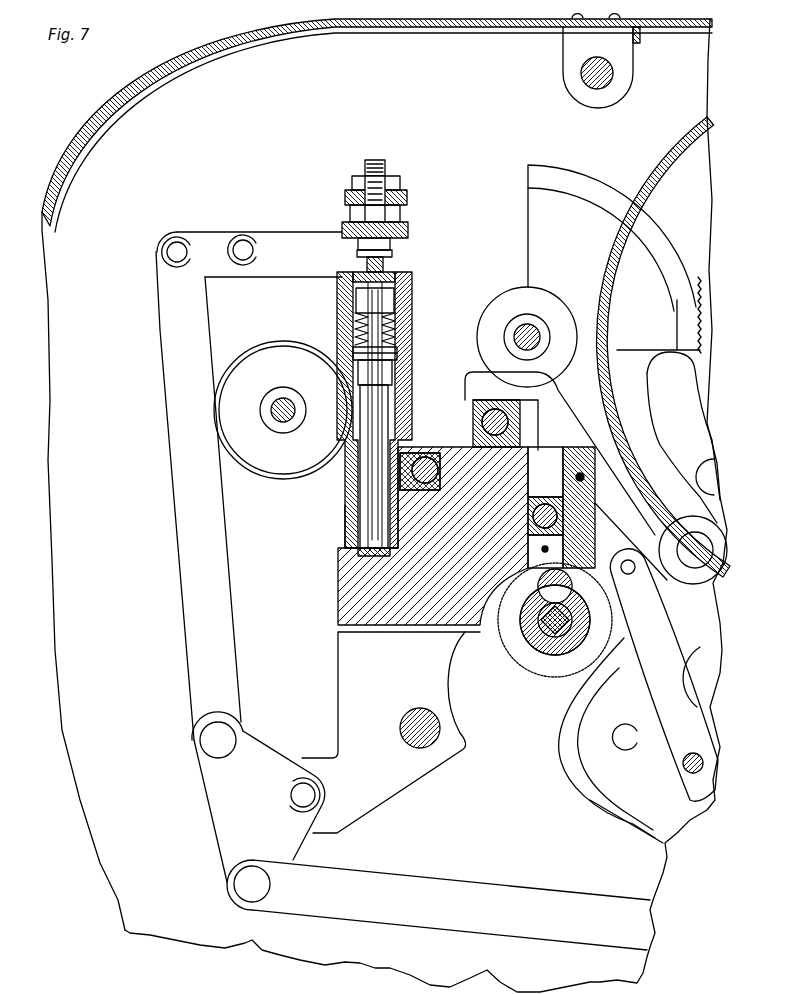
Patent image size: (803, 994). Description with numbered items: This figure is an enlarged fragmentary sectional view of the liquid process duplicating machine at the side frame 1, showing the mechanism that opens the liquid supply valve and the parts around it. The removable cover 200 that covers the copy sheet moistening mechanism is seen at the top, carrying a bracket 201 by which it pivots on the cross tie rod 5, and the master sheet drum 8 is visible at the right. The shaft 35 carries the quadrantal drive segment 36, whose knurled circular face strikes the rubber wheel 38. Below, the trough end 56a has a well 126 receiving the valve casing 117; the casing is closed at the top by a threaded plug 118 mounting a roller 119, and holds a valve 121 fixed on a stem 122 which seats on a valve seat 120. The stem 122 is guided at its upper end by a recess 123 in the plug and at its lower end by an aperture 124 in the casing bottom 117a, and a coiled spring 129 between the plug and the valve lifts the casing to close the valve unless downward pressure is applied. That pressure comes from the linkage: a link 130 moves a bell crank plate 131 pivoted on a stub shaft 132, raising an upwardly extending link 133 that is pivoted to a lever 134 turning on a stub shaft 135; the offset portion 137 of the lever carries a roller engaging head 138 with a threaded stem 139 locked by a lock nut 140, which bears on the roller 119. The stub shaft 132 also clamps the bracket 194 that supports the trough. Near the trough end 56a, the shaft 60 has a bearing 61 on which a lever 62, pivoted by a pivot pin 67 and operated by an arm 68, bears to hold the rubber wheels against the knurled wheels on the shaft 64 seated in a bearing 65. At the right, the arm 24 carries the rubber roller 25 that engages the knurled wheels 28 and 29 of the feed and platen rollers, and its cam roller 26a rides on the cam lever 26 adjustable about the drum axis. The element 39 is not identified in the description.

The side frame 1 is at (55, 238).
The cross tie rod 5 is at (613, 73).
The master sheet drum 8 is at (667, 153).
The arm 24 is at (635, 820).
The rubber roller 25 is at (560, 722).
The cam lever 26 is at (663, 428).
The cam roller 26a is at (683, 510).
The knurled wheel 28 is at (518, 652).
The knurled wheel 29 is at (712, 690).
The shaft 35 is at (522, 327).
The quadrantal drive segment 36 is at (576, 241).
The rubber wheel 38 is at (288, 371).
The roller shaft 39 is at (283, 423).
The trough end 56a is at (340, 593).
The shaft 60 is at (485, 420).
The bearing 61 is at (472, 408).
The lever 62 is at (515, 391).
The shaft 64 is at (428, 462).
The bearing 65 is at (438, 470).
The pivot pin 67 is at (580, 473).
The arm 68 is at (663, 691).
The valve casing 117 is at (412, 303).
The casing bottom 117a is at (348, 545).
The threaded plug 118 is at (393, 313).
The roller 119 is at (392, 260).
The valve seat 120 is at (390, 390).
The valve 121 is at (393, 352).
The stem 122 is at (388, 370).
The recess 123 is at (397, 282).
The aperture 124 is at (363, 550).
The well 126 is at (347, 518).
The coiled spring 129 is at (390, 332).
The link 130 is at (352, 913).
The bell crank plate 131 is at (215, 810).
The stub shaft 132 is at (300, 803).
The link 133 is at (163, 304).
The lever 134 is at (313, 254).
The stub shaft 135 is at (238, 238).
The offset portion 137 is at (407, 197).
The roller engaging head 138 is at (408, 230).
The stem 139 is at (400, 213).
The lock nut 140 is at (395, 178).
The bracket 194 is at (405, 666).
The removable cover 200 is at (82, 135).
The bracket 201 is at (563, 55).